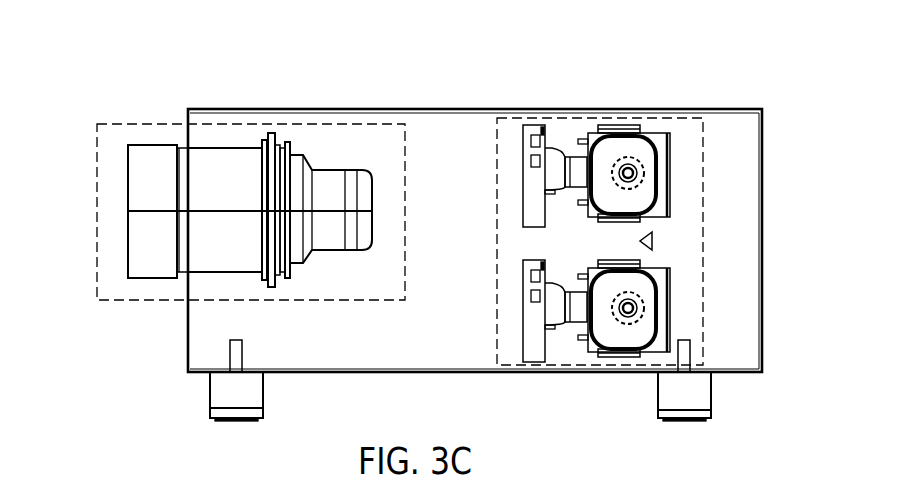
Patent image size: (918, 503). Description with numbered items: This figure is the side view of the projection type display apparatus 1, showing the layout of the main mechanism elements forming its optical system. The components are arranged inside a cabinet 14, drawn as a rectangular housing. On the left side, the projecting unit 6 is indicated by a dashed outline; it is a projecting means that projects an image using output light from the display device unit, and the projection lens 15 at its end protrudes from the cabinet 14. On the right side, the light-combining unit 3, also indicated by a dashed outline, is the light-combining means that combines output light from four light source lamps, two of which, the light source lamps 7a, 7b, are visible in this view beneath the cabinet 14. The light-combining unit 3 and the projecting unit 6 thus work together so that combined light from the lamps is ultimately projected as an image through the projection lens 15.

The apparatus 1 is at (488, 85).
The cabinet 14 is at (405, 109).
The projecting unit 6 is at (131, 122).
The projection lens 15 is at (143, 254).
The light-combining unit 3 is at (703, 335).
The light source lamp 7a is at (220, 391).
The light source lamp 7b is at (703, 395).